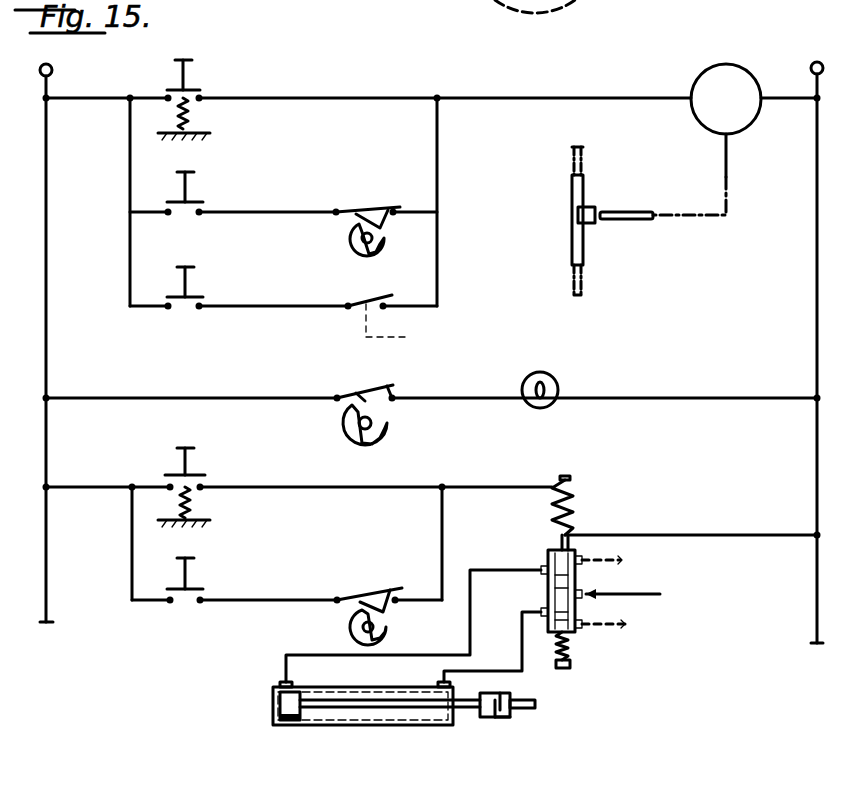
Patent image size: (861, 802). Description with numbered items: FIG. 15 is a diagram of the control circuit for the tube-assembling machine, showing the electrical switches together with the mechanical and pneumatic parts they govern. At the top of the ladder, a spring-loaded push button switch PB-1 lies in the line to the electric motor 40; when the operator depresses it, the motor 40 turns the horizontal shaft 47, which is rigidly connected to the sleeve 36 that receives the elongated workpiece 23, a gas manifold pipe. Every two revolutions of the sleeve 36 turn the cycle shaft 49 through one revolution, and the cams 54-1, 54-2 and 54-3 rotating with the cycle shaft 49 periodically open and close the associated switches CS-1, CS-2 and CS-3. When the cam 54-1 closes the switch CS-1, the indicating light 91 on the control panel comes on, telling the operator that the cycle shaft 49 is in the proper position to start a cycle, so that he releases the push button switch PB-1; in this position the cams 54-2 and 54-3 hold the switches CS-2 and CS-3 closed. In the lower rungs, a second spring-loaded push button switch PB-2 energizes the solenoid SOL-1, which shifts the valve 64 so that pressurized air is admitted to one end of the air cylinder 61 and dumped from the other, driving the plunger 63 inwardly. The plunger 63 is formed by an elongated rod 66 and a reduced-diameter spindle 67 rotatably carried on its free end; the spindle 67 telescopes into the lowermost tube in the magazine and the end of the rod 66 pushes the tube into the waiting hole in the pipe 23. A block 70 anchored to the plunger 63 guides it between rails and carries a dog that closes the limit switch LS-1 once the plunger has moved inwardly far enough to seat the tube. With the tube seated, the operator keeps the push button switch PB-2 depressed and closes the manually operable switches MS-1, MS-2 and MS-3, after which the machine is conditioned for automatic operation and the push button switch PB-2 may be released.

The push button switch PB-1 is at (204, 90).
The manually operable switch MS-2 is at (232, 165).
The switch CS-2 is at (360, 210).
The cam 54-2 is at (352, 243).
The manually operable switch MS-3 is at (195, 288).
The limit switch LS-1 is at (362, 295).
The electric motor 40 is at (724, 64).
The workpiece 23 is at (580, 160).
The horizontal shaft 47 is at (608, 212).
The sleeve 36 is at (561, 241).
The switch CS-1 is at (355, 392).
The cam 54-1 is at (343, 422).
The indicating light 91 is at (557, 382).
The push button switch PB-2 is at (203, 478).
The manually operable switch MS-1 is at (225, 562).
The switch CS-3 is at (392, 570).
The cam 54-3 is at (350, 627).
The cycle shaft 49 is at (372, 238).
The solenoid SOL-1 is at (575, 500).
The valve 64 is at (548, 600).
The air cylinder 61 is at (273, 700).
The plunger 63 is at (405, 672).
The block 70 is at (500, 695).
The spindle 67 is at (535, 704).
The rod 66 is at (518, 712).